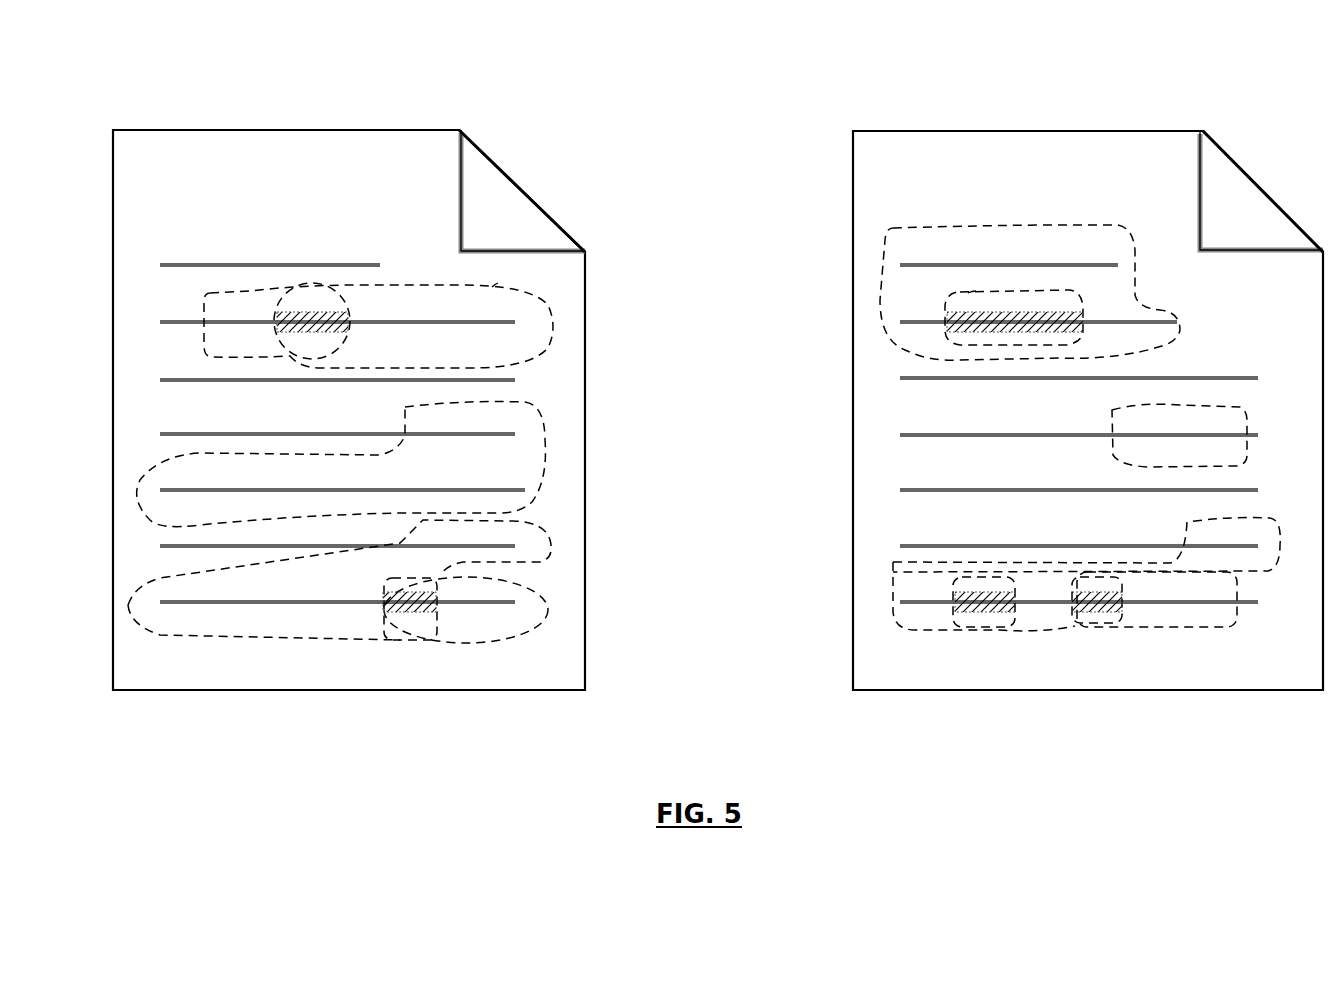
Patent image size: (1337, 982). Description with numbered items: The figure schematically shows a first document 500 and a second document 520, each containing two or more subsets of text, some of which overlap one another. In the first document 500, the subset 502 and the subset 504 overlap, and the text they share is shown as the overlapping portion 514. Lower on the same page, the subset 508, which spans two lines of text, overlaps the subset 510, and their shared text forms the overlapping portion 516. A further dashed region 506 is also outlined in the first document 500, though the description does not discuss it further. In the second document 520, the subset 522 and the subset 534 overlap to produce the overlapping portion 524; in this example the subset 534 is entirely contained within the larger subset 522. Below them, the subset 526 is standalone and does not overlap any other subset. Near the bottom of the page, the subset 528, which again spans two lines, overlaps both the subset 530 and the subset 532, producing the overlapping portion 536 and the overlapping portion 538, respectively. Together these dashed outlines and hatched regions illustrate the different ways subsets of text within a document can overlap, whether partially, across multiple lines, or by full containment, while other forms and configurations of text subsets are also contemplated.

The first document 500 is at (368, 62).
The subset 502 is at (255, 290).
The subset 504 is at (491, 287).
The second paragraph region 506 is at (527, 403).
The subset 508 is at (520, 527).
The subset 510 is at (536, 590).
The overlapping portion 514 is at (312, 315).
The overlapping portion 516 is at (410, 597).
The second document 520 is at (1109, 62).
The subset 522 is at (920, 228).
The overlapping portion 524 is at (970, 292).
The subset 526 is at (1112, 413).
The subset 528 is at (1185, 532).
The subset 530 is at (970, 576).
The subset 532 is at (1155, 628).
The subset 534 is at (968, 320).
The overlapping portion 536 is at (975, 594).
The overlapping portion 538 is at (1096, 605).